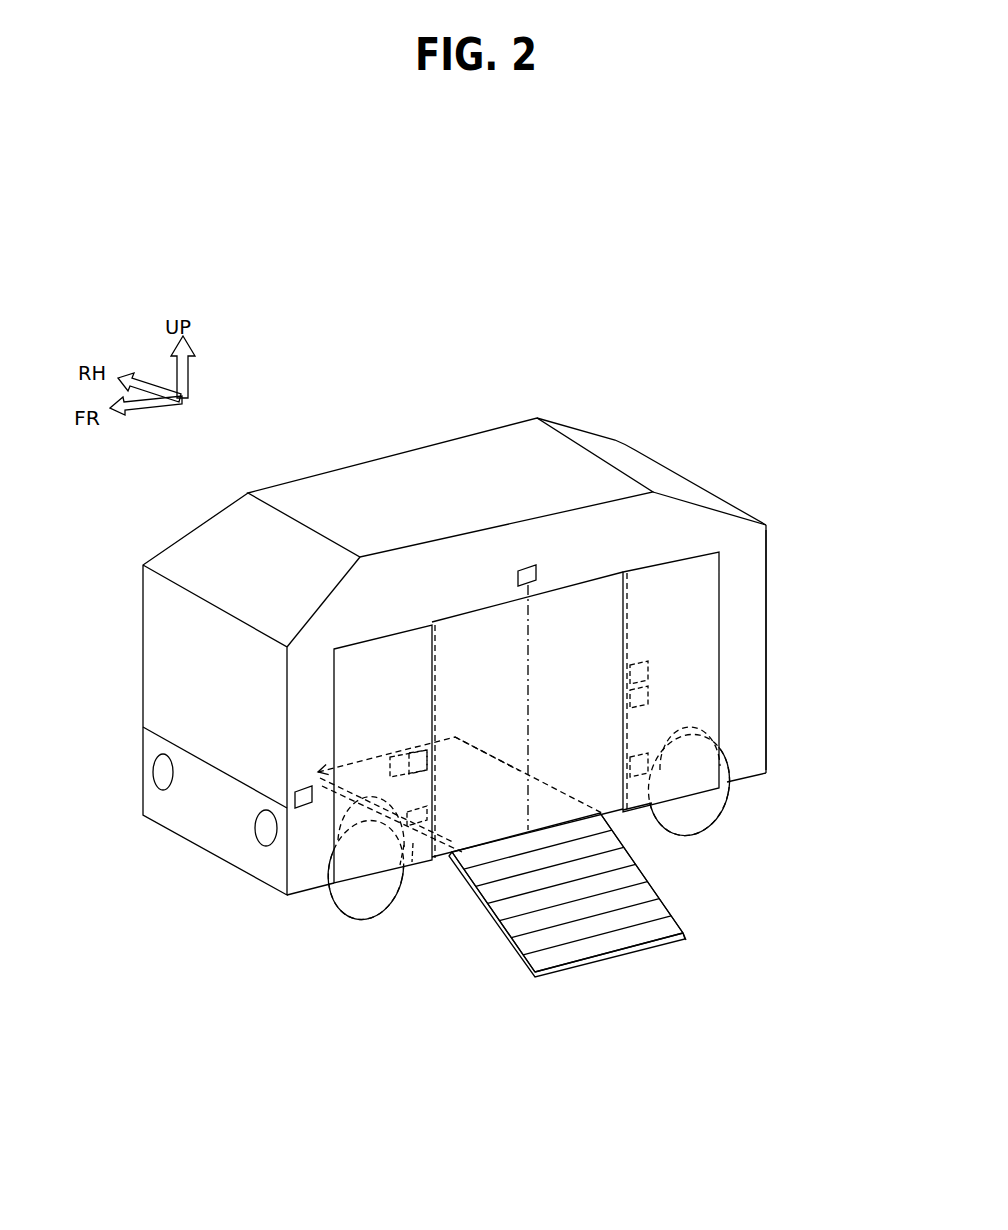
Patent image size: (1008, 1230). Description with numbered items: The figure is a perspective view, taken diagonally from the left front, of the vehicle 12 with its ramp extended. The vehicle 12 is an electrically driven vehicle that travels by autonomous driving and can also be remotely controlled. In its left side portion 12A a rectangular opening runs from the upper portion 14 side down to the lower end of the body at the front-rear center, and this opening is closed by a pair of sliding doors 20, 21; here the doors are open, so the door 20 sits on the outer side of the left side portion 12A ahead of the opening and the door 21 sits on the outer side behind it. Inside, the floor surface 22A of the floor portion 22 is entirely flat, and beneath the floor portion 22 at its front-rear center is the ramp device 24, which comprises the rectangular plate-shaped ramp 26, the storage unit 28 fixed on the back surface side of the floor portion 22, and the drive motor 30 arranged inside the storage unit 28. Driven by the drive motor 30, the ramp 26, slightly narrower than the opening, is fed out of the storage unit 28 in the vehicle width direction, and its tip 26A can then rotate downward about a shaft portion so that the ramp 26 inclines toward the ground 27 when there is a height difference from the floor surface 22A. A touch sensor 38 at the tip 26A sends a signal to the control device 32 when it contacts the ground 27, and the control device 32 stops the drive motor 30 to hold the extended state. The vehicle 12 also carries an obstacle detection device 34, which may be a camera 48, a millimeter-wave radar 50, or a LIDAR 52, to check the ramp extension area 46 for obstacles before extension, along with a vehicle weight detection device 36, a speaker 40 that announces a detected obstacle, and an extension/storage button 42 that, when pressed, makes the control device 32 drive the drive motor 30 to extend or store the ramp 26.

The vehicle 12 is at (726, 421).
The left side portion 12A is at (750, 682).
The upper portion 14 is at (480, 555).
The door 20 is at (470, 630).
The door 21 is at (668, 582).
The floor portion 22 is at (511, 772).
The floor surface 22A is at (492, 818).
The ramp device 24 is at (502, 758).
The ramp 26 is at (635, 895).
The tip 26A is at (643, 940).
The ground 27 is at (687, 953).
The storage unit 28 is at (470, 756).
The drive motor 30 is at (400, 752).
The control device 32 is at (418, 750).
The obstacle detection device 34 is at (577, 705).
The vehicle weight detection device 36 is at (304, 801).
The touch sensor 38 is at (600, 960).
The speaker 40 is at (648, 692).
The extension/storage button 42 is at (648, 673).
The ramp extension area 46 is at (517, 958).
The camera 48 is at (532, 567).
The millimeter-wave radar 50 is at (408, 818).
The LIDAR 52 is at (648, 766).